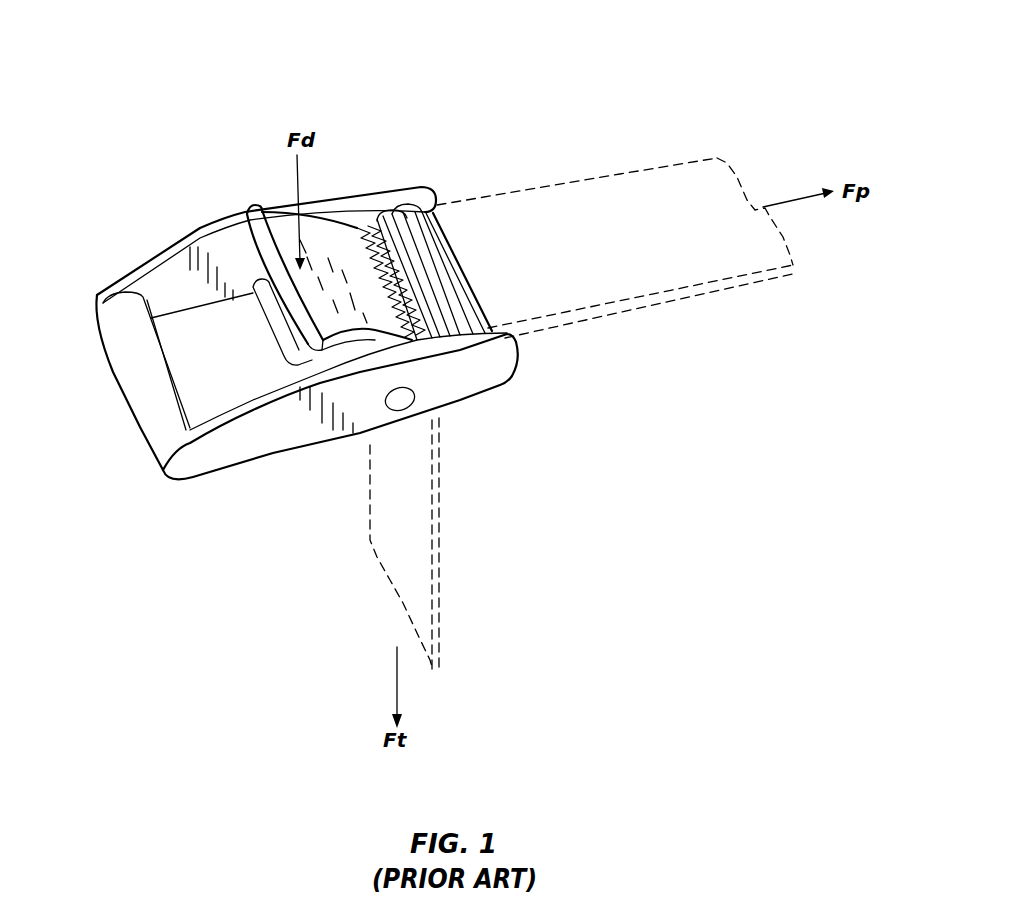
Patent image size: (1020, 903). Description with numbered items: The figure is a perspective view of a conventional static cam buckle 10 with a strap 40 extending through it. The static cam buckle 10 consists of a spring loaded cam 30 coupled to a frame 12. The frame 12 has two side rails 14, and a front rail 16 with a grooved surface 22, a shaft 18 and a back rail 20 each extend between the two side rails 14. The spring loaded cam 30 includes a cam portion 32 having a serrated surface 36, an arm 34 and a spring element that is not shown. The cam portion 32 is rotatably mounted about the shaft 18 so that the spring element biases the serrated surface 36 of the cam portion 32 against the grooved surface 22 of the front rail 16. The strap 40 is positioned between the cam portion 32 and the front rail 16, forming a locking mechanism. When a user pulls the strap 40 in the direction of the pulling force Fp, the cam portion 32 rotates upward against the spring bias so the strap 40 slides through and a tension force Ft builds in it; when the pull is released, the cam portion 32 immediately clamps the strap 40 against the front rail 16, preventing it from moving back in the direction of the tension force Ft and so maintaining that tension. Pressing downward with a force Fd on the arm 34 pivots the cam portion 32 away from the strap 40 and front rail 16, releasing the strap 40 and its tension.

The static cam buckle 10 is at (142, 126).
The frame 12 is at (231, 484).
The side rails 14 is at (173, 270).
The front rail 16 is at (460, 302).
The shaft 18 is at (402, 404).
The back rail 20 is at (140, 383).
The grooved surface 22 is at (440, 243).
The spring loaded cam 30 is at (337, 245).
The cam portion 32 is at (353, 228).
The arm 34 is at (261, 210).
The serrated surface 36 is at (447, 307).
The strap 40 is at (633, 195).